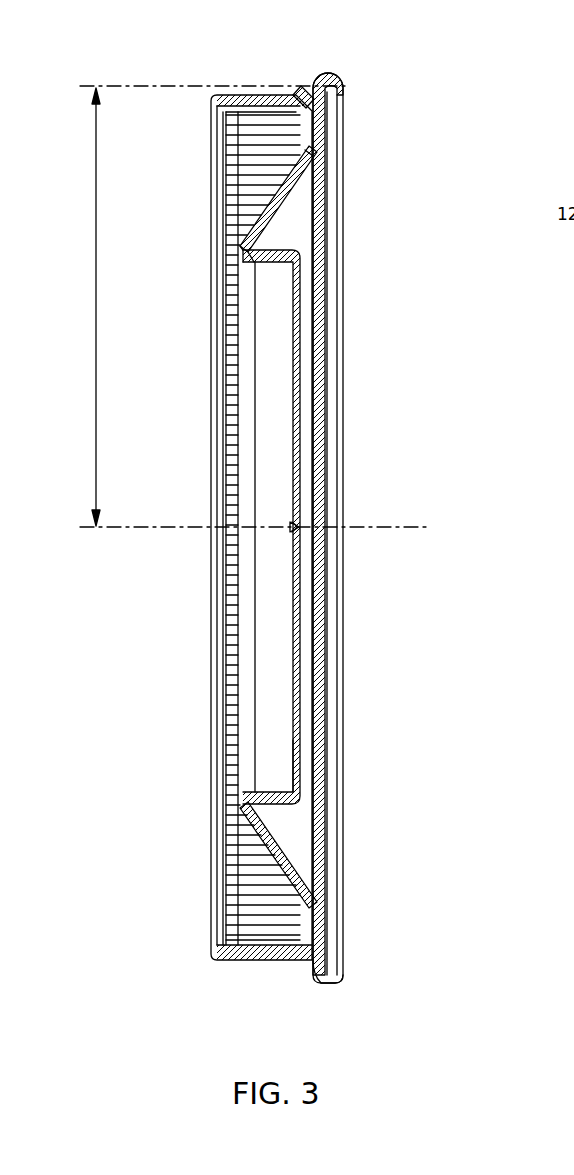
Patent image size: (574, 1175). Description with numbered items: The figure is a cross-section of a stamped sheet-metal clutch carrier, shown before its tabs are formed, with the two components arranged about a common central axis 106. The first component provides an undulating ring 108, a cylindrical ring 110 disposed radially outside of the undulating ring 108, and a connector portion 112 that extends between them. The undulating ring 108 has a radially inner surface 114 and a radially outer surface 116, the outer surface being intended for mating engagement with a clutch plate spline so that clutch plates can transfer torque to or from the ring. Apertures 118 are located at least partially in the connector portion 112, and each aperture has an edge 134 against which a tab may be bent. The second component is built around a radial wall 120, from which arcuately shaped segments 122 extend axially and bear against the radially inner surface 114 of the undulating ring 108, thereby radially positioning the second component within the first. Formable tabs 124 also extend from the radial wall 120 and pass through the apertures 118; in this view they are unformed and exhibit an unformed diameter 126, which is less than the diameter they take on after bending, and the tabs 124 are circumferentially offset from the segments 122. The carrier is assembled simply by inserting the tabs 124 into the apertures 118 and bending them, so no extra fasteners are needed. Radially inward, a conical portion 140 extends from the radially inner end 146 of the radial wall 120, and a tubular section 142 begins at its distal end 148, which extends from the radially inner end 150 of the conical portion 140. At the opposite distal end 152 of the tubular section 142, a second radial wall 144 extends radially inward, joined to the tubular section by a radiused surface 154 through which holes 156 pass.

The central axis 106 is at (364, 522).
The undulating ring 108 is at (250, 165).
The cylindrical ring 110 is at (335, 514).
The connector portion 112 is at (313, 962).
The radially inner surface 114 is at (300, 943).
The radially outer surface 116 is at (240, 963).
The apertures 118 is at (320, 100).
The radial wall 120 is at (320, 136).
The arcuately shaped segments 122 is at (300, 935).
The formable tabs 124 is at (303, 90).
The unformed diameter 126 is at (96, 297).
The edge 134 is at (240, 112).
The conical portion 140 is at (290, 178).
The tubular section 142 is at (280, 255).
The radial wall 144 is at (315, 539).
The radially inner end 146 is at (318, 156).
The distal end 148 is at (243, 258).
The radially inner end 150 is at (240, 246).
The distal end 152 is at (300, 258).
The radiused surface 154 is at (300, 800).
The holes 156 is at (296, 765).